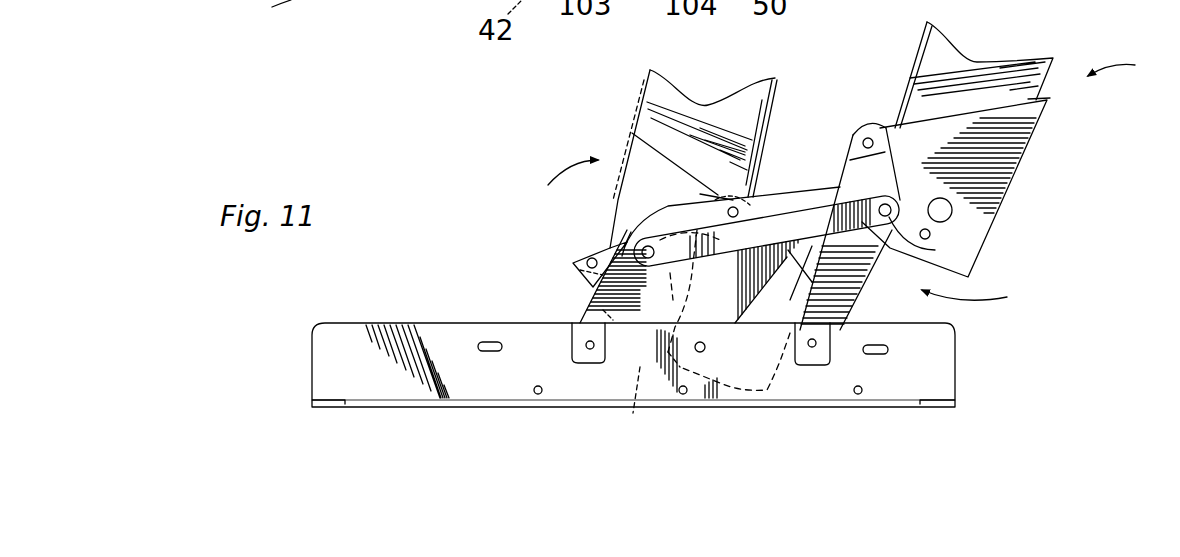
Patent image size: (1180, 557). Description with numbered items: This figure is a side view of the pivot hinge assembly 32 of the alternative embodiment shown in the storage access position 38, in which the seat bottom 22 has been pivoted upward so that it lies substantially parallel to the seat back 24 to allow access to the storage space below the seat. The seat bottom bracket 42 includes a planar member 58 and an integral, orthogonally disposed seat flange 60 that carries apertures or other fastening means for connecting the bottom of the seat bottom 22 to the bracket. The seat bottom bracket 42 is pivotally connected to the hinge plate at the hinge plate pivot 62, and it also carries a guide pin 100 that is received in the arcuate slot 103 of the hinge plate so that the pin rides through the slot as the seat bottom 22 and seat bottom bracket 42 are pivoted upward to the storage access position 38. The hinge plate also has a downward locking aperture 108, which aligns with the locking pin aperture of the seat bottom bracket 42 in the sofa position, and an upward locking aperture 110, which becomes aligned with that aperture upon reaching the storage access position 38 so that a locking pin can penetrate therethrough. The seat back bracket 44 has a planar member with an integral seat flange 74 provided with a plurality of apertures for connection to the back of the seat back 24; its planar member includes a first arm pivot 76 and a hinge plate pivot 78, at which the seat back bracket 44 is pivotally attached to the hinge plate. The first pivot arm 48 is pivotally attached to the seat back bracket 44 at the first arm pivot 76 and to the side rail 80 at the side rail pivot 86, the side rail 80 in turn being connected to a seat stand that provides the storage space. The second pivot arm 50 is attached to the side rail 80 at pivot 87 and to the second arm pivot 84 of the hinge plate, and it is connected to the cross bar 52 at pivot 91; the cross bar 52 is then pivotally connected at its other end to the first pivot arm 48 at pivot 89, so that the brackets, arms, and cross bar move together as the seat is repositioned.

The seat bottom 22 is at (660, 90).
The seat back 24 is at (975, 70).
The pivot hinge assembly 32 is at (984, 295).
The storage access position 38 is at (1132, 70).
The seat bottom bracket 42 is at (633, 203).
The seat back bracket 44 is at (1010, 185).
The first pivot arm 48 is at (857, 303).
The second pivot arm 50 is at (583, 325).
The cross bar 52 is at (774, 212).
The planar member 58 is at (663, 170).
The seat flange 60 is at (632, 133).
The hinge plate pivot 62 is at (700, 291).
The seat flange 74 is at (1040, 103).
The first arm pivot 76 is at (867, 137).
The hinge plate pivot 78 is at (767, 325).
The side rail 80 is at (940, 372).
The second arm pivot 84 is at (768, 180).
The side rail pivot 86 is at (813, 348).
The pivot 87 is at (587, 347).
The pivot 89 is at (892, 248).
The pivot 91 is at (648, 260).
The guide pin 100 is at (640, 412).
The arcuate slot 103 is at (778, 90).
The downward locking aperture 108 is at (700, 352).
The upward locking aperture 110 is at (575, 263).